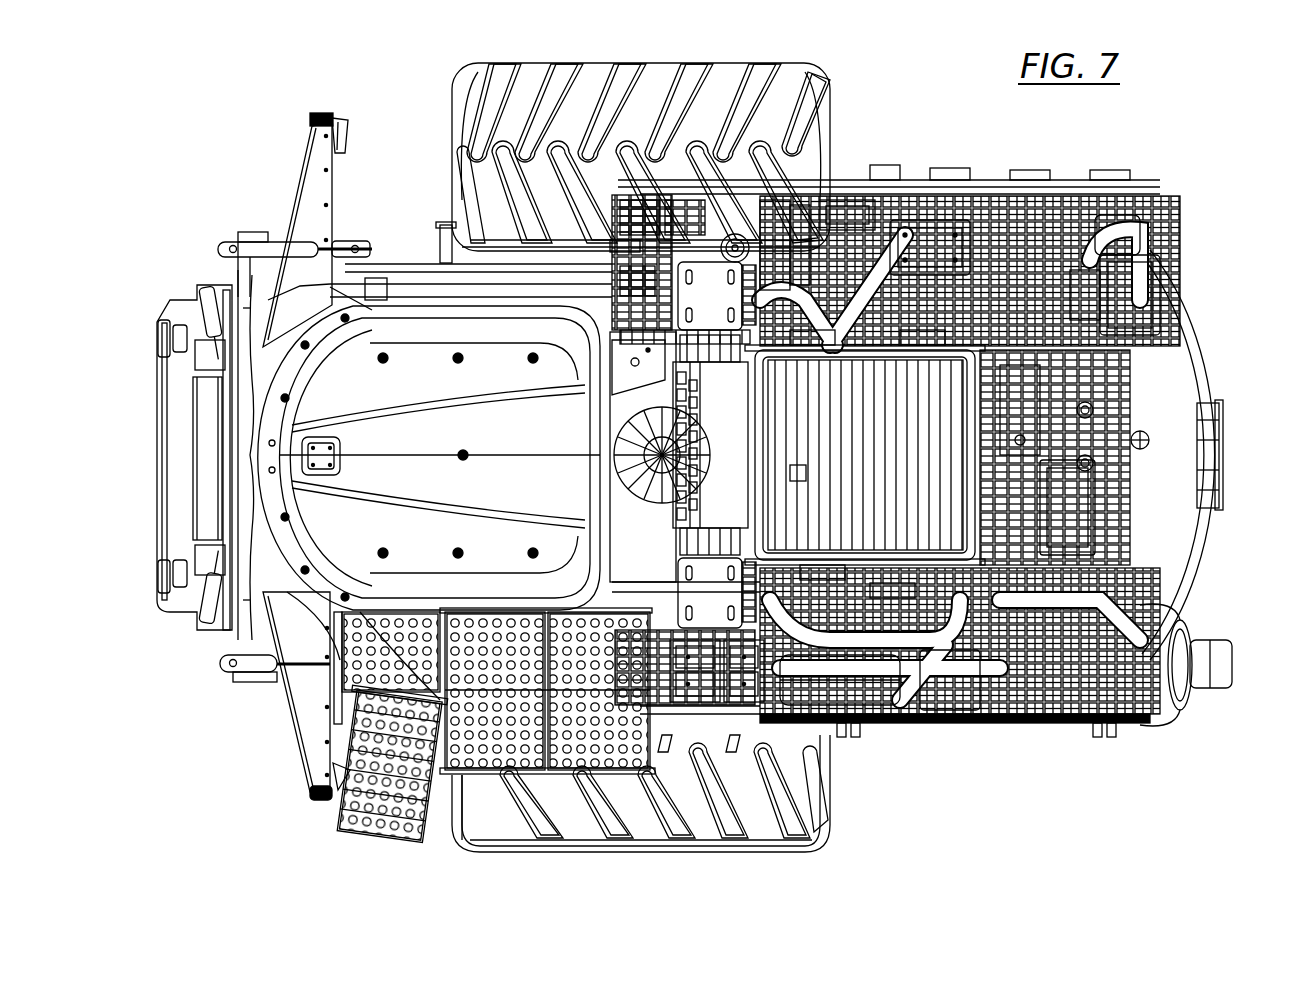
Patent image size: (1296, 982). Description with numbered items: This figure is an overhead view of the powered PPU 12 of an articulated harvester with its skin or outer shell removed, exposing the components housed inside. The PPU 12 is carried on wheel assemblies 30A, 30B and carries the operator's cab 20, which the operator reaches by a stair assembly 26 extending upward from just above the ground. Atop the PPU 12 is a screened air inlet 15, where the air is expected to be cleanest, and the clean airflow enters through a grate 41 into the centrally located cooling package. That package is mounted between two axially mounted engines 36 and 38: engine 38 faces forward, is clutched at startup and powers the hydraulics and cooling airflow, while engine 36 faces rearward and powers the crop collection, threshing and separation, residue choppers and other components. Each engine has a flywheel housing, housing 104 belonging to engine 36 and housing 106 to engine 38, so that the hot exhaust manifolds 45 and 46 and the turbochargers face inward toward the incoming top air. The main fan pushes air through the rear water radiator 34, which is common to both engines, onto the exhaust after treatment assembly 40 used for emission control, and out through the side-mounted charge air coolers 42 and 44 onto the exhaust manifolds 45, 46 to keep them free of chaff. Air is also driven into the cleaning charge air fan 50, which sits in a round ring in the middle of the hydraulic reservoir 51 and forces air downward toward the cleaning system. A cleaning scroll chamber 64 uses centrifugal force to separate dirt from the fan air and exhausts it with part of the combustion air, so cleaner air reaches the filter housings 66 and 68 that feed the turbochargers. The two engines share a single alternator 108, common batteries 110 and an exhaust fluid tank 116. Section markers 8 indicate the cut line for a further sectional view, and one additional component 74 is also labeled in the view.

The section line 8- 8 is at (130, 520).
The PPU 12 is at (255, 135).
The screened air inlet 15 is at (793, 478).
The operator's cab 20 is at (410, 360).
The stair assembly 26 is at (345, 826).
The front wheel 30A is at (795, 800).
The front wheel 30B is at (810, 115).
The radiator 34 is at (1000, 380).
The engine 36 is at (870, 720).
The engine 38 is at (925, 245).
The exhaust after treatment assembly 40 is at (1085, 503).
The grate 41 is at (805, 428).
The charge air cooler 42 is at (895, 583).
The charge air cooler 44 is at (870, 352).
The exhaust manifold 45 is at (840, 555).
The exhaust manifold 46 is at (940, 345).
The cleaning charge air fan 50 is at (640, 450).
The hydraulic reservoir 51 is at (640, 530).
The cleaning scroll chamber 64 is at (688, 446).
The filter housing 66 is at (718, 309).
The filter housing 68 is at (714, 604).
The cooling fan drive 74 is at (785, 170).
The flywheel housing 104 is at (940, 715).
The flywheel housing 106 is at (850, 178).
The alternator 108 is at (777, 840).
The batteries 110 is at (710, 790).
The exhaust fluid tank 116 is at (1150, 282).